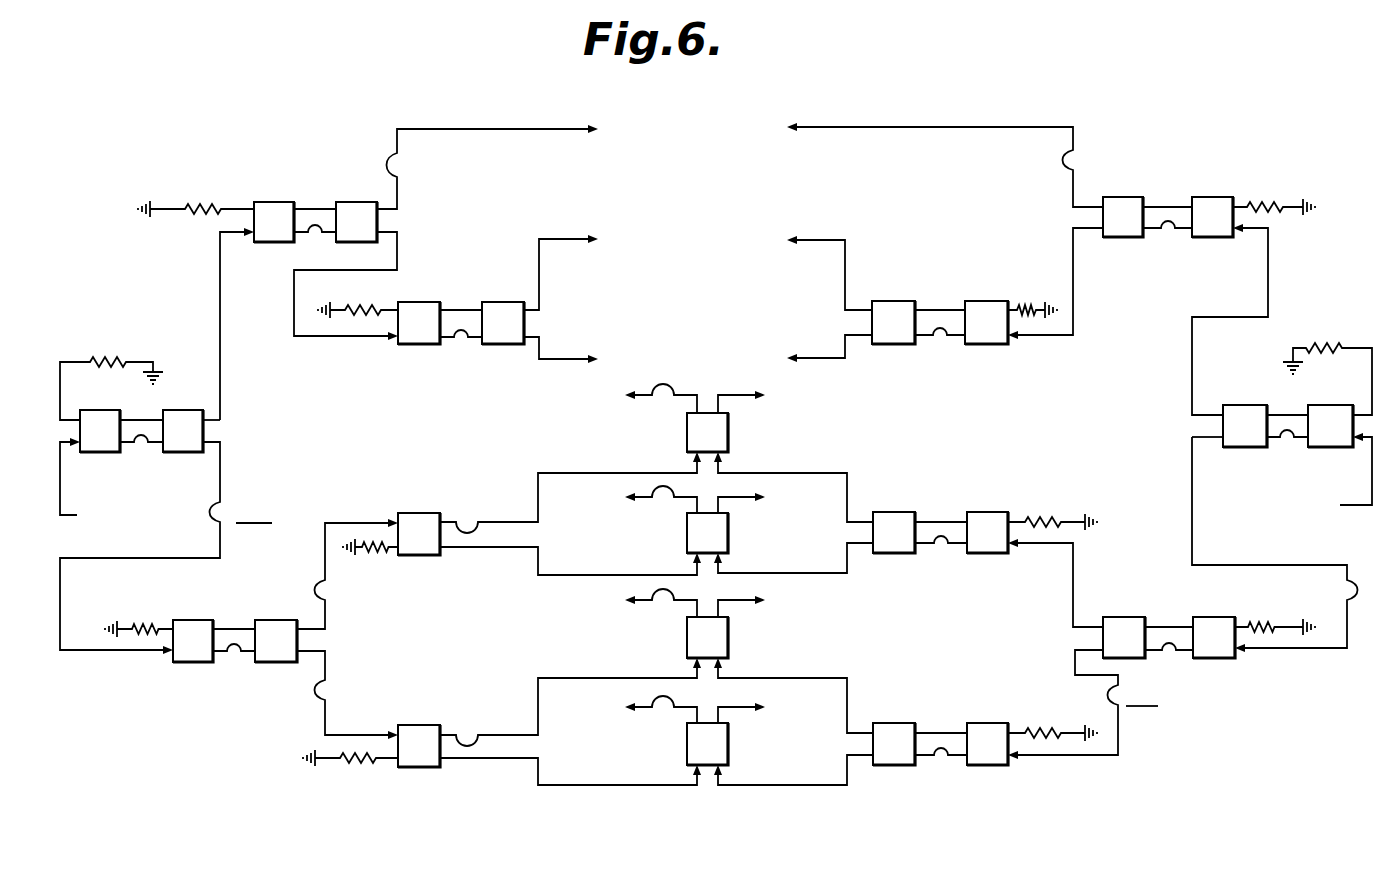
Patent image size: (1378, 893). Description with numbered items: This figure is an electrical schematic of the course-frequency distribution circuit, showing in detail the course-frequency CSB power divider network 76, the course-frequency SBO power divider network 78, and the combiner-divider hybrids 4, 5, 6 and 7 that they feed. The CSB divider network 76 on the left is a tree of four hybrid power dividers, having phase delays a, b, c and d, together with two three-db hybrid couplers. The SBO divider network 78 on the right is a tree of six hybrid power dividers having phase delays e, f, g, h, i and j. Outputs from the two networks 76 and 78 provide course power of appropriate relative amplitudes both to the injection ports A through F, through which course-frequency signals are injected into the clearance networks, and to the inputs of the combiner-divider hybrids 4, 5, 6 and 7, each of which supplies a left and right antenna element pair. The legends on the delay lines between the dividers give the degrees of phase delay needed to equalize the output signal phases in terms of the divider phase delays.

The course-frequency CSB power divider network 76 is at (322, 184).
The course-frequency SBO power divider network 78 is at (1195, 148).
The combiner-divider hybrid 4 is at (691, 411).
The combiner-divider hybrid 5 is at (691, 512).
The combiner-divider hybrid 6 is at (691, 616).
The combiner-divider hybrid 7 is at (691, 723).